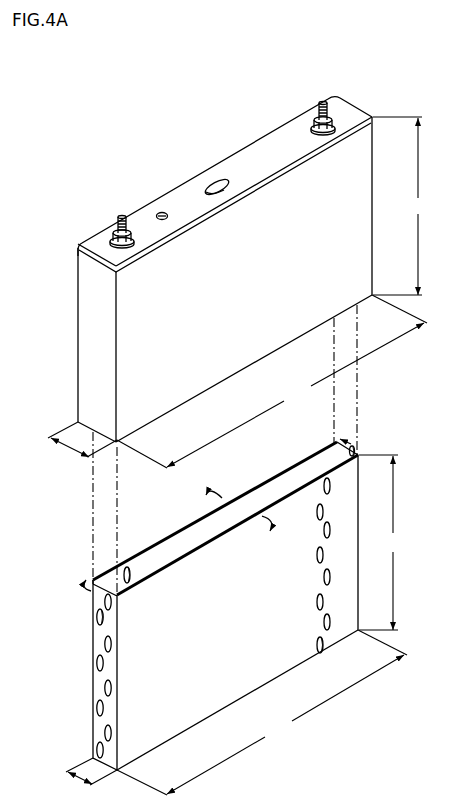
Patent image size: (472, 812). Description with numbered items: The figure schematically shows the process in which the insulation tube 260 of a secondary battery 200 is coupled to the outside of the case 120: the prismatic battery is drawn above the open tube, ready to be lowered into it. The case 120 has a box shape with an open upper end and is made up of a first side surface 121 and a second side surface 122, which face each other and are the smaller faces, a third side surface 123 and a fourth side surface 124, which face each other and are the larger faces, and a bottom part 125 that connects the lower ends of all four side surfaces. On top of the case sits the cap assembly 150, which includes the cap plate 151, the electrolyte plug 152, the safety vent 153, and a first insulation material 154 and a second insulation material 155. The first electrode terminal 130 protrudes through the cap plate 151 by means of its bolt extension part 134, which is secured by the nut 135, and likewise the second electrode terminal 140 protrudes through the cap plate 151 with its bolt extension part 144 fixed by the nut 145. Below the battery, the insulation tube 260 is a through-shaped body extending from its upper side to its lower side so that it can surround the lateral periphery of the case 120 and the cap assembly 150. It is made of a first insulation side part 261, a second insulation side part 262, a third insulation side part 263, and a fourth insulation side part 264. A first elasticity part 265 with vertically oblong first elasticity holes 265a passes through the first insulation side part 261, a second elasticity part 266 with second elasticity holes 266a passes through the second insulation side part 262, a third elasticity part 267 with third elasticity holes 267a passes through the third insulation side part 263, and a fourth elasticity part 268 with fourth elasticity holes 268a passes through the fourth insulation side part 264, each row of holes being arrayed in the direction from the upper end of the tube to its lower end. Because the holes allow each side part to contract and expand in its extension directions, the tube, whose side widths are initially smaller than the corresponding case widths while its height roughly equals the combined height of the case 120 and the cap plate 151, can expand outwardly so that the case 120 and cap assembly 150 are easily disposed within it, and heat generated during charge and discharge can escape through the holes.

The secondary battery 200 is at (65, 97).
The case 120 is at (78, 327).
The first side surface 121 is at (84, 365).
The second side surface 122 is at (372, 172).
The third side surface 123 is at (284, 334).
The fourth side surface 124 is at (78, 278).
The bottom part 125 is at (198, 397).
The first electrode terminal 130 is at (116, 214).
The bolt extension part 134 is at (122, 214).
The nut 135 is at (113, 231).
The first insulation material 154 is at (110, 237).
The second electrode terminal 140 is at (317, 101).
The bolt extension part 144 is at (323, 101).
The nut 145 is at (331, 118).
The second insulation material 155 is at (335, 124).
The cap assembly 150 is at (183, 184).
The cap plate 151 is at (260, 147).
The electrolyte plug 152 is at (160, 212).
The safety vent 153 is at (214, 181).
The insulation tube 260 is at (73, 671).
The first insulation side part 261 is at (92, 707).
The second insulation side part 262 is at (361, 453).
The third insulation side part 263 is at (186, 728).
The fourth insulation side part 264 is at (202, 520).
The first elasticity part 265 is at (97, 613).
The first elasticity holes 265a is at (98, 620).
The second elasticity part 266 is at (354, 447).
The second elasticity holes 266a is at (357, 451).
The third elasticity part 267 is at (327, 647).
The third elasticity holes 267a is at (322, 641).
The fourth elasticity part 268 is at (124, 556).
The fourth elasticity holes 268a is at (130, 560).